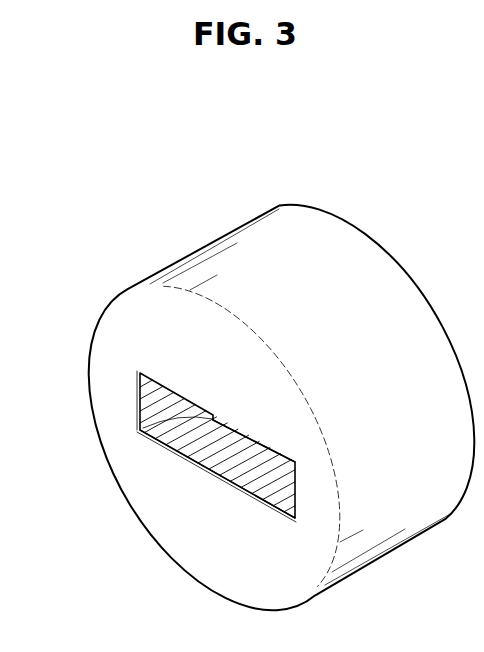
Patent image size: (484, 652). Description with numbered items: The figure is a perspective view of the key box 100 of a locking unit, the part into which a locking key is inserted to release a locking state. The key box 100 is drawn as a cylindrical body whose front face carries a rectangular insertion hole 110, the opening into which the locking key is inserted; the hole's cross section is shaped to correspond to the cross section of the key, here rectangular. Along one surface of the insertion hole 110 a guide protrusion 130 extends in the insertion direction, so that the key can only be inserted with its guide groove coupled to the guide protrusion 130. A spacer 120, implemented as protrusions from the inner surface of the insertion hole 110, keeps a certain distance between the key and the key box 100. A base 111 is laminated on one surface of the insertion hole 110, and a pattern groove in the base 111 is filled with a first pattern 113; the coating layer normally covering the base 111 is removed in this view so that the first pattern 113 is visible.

The key box 100 is at (156, 146).
The insertion hole 110 is at (168, 389).
The base 111 is at (142, 428).
The first pattern 113 is at (188, 457).
The spacer 120 is at (228, 466).
The guide protrusion 130 is at (163, 430).